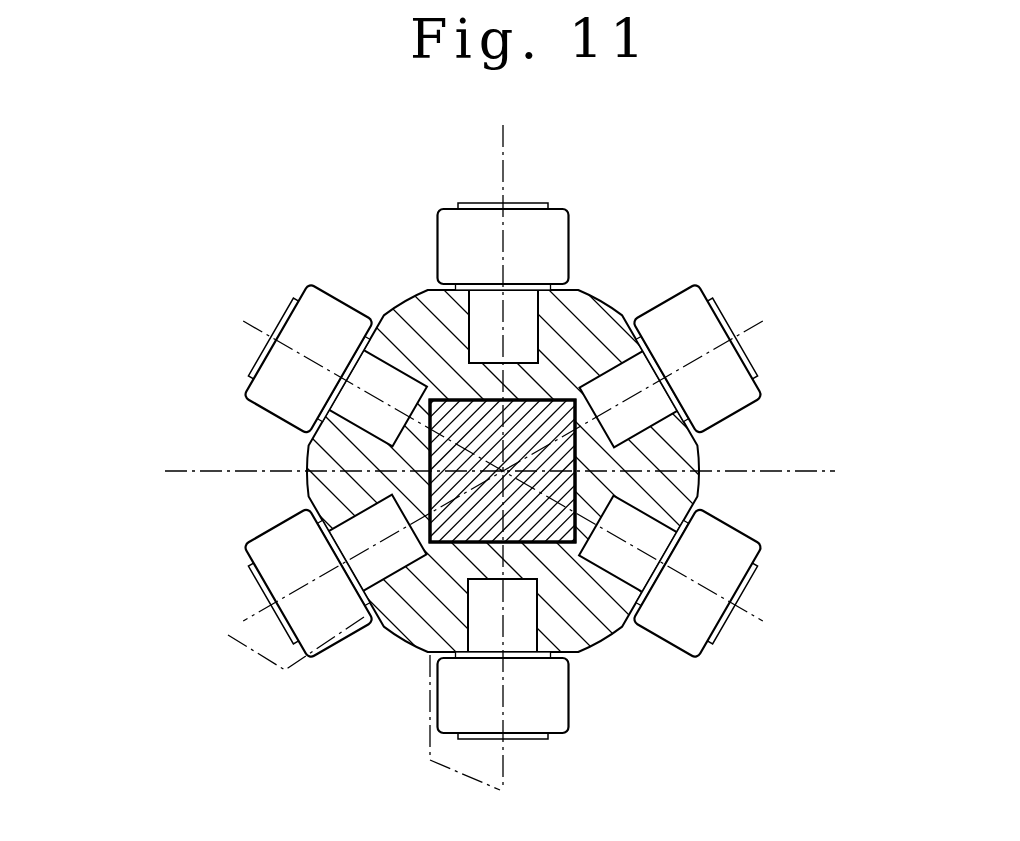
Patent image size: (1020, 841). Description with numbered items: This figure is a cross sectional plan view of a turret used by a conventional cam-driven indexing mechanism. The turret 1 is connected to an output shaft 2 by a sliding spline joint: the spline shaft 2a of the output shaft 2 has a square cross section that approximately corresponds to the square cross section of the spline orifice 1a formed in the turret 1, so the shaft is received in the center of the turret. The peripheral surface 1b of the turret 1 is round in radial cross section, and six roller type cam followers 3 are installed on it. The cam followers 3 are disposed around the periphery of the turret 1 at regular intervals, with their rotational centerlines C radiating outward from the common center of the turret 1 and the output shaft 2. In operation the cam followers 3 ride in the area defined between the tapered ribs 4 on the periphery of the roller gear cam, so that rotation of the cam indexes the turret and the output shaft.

The turret 1 is at (510, 441).
The spline orifice 1a is at (572, 470).
The peripheral surface 1b is at (598, 283).
The output shaft 2 is at (453, 530).
The spline shaft 2a is at (549, 557).
The roller type cam followers 3 is at (567, 232).
The tapered ribs 4 is at (355, 655).
The rotational centerlines C is at (507, 158).